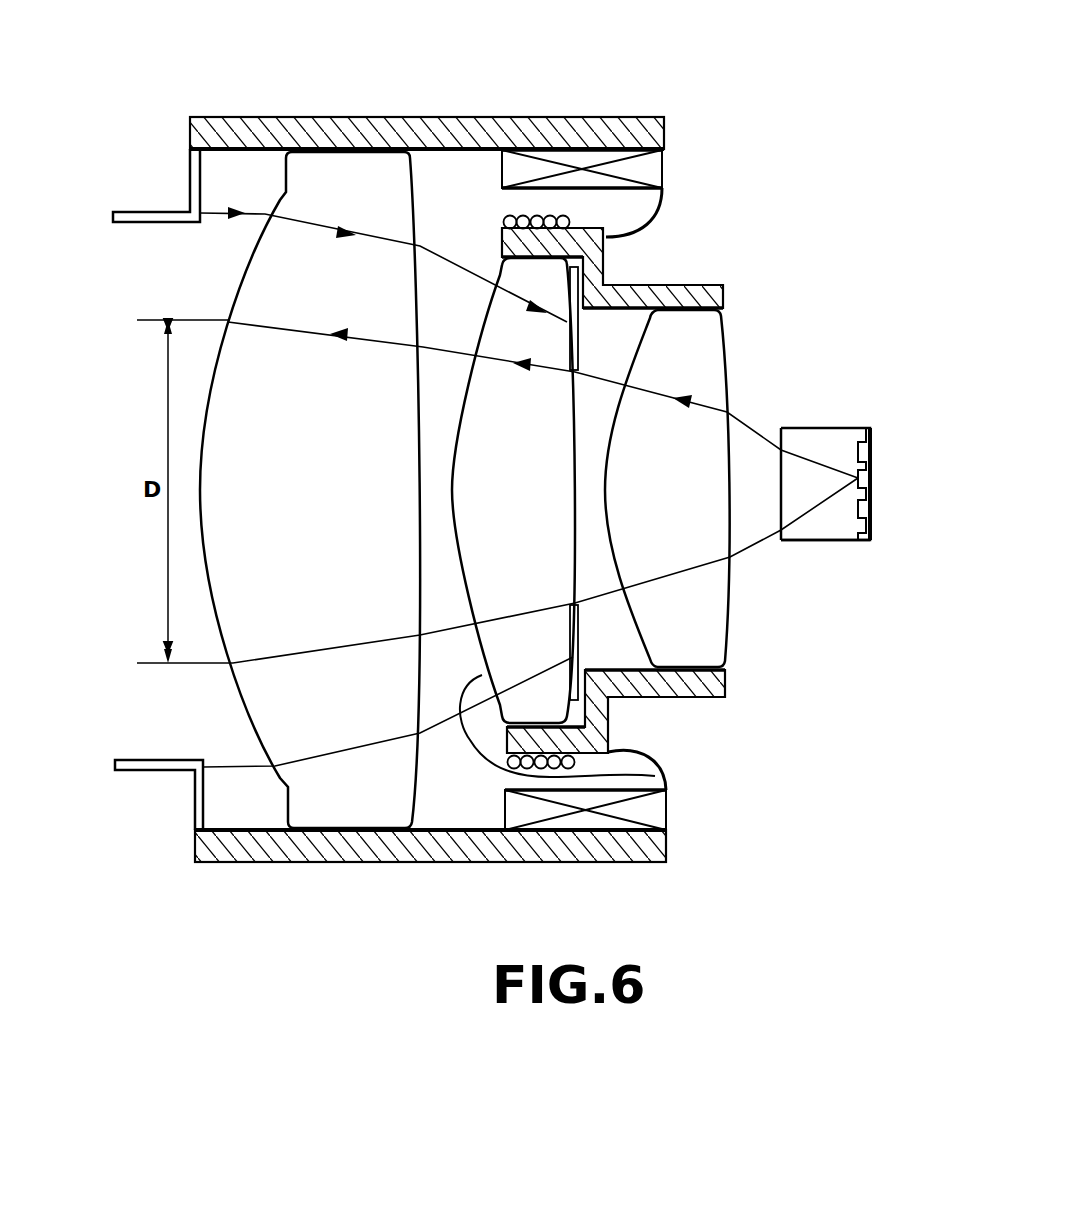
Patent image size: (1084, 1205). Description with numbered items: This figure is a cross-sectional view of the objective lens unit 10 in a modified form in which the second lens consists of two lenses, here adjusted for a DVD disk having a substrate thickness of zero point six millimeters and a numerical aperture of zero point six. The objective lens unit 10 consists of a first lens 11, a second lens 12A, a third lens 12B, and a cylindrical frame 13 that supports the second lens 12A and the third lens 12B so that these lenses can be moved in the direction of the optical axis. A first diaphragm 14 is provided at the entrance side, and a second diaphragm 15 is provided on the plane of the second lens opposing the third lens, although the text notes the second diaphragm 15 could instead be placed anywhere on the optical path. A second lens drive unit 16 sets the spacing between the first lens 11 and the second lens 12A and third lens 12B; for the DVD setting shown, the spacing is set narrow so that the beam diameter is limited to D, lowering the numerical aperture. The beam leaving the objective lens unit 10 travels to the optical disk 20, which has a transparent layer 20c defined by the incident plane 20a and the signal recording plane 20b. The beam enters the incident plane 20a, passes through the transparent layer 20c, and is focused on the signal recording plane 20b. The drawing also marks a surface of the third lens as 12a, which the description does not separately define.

The objective lens unit 10 is at (802, 132).
The first lens 11 is at (246, 262).
The second lens 12A is at (655, 776).
The third lens 12B is at (648, 636).
The rear surface of third lens 12a is at (724, 354).
The cylindrical frame 13 is at (698, 293).
The first diaphragm 14 is at (147, 210).
The second diaphragm 15 is at (580, 340).
The second lens drive unit 16 is at (516, 203).
The optical disk 20 is at (840, 428).
The incident plane 20a is at (781, 505).
The signal recording plane 20b is at (872, 505).
The transparent layer 20c is at (842, 527).